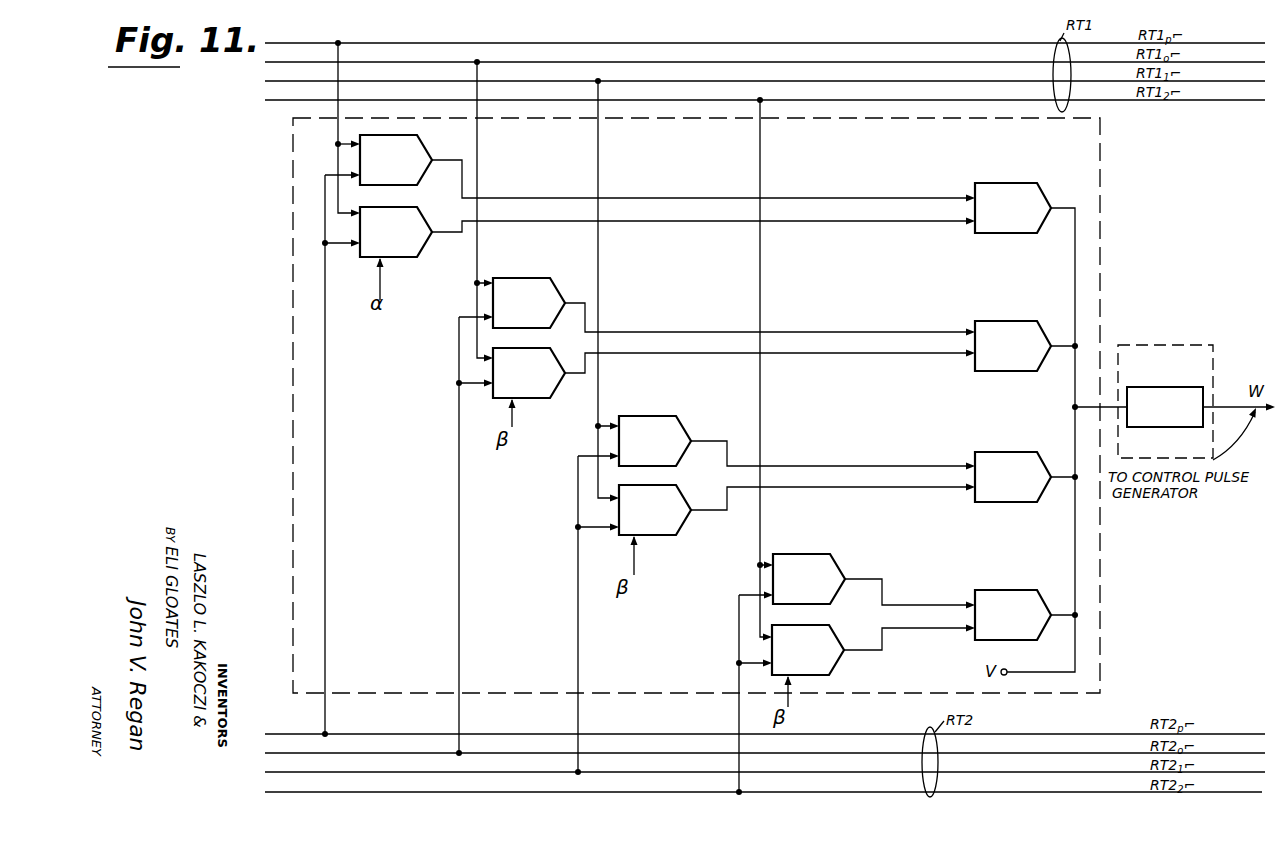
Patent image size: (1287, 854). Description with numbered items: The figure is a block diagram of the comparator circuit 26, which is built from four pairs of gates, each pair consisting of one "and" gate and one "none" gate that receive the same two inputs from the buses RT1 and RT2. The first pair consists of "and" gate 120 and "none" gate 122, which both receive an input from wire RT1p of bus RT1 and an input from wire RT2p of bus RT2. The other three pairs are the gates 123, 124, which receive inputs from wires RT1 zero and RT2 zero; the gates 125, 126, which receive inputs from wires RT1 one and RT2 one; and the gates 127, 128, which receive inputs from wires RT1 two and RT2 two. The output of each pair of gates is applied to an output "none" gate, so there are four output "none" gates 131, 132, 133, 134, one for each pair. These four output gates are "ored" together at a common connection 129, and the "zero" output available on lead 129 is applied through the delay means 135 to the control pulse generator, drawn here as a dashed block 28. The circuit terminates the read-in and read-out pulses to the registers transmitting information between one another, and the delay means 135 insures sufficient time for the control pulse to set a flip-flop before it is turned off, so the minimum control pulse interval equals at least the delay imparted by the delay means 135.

The "and" gate 120 is at (417, 135).
The "none" gate 122 is at (420, 212).
The "and" gate 123 is at (540, 278).
The "none" gate 124 is at (530, 398).
The "and" gate 125 is at (661, 416).
The "none" gate 126 is at (660, 535).
The "and" gate 127 is at (819, 554).
The "none" gate 128 is at (836, 664).
The common connection 129 is at (1073, 405).
The output "none" gate 131 is at (1042, 198).
The output "none" gate 132 is at (1038, 328).
The output "none" gate 133 is at (1038, 459).
The output "none" gate 134 is at (1040, 598).
The delay means 135 is at (1168, 387).
The comparator circuit 26 is at (1106, 232).
The delay circuit 28 is at (1178, 340).